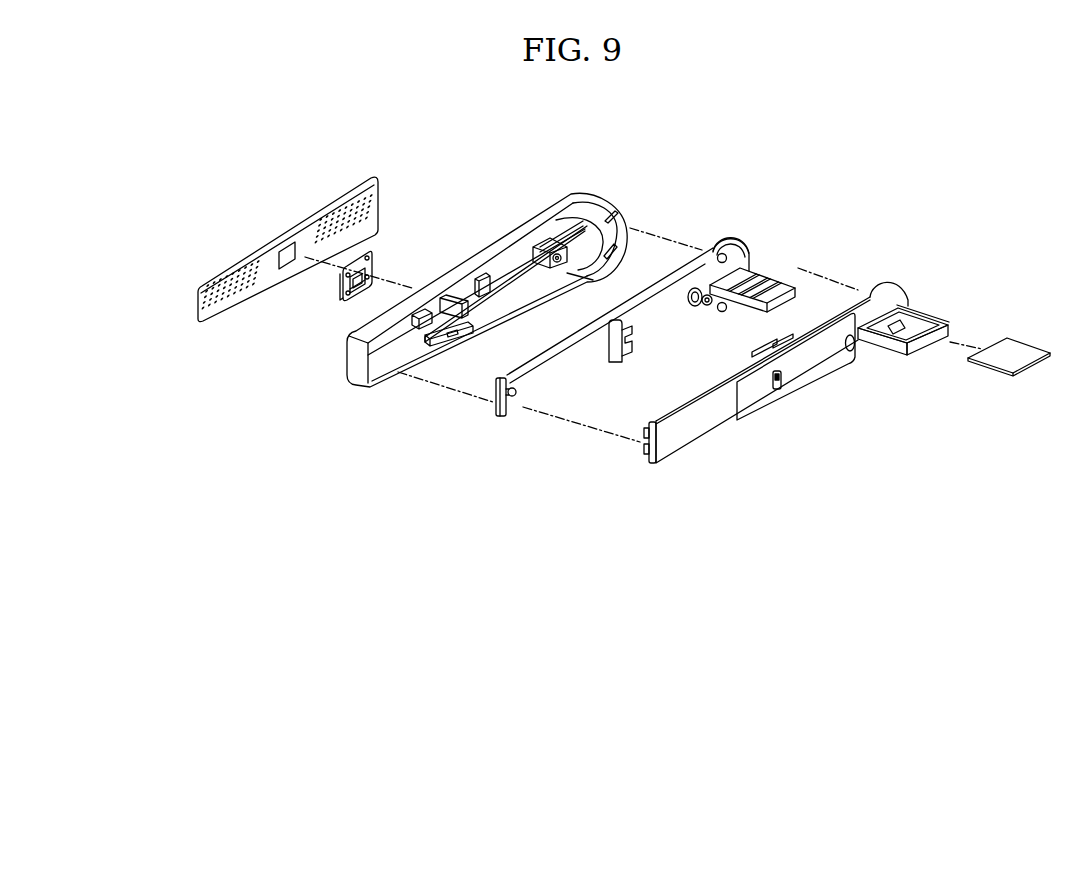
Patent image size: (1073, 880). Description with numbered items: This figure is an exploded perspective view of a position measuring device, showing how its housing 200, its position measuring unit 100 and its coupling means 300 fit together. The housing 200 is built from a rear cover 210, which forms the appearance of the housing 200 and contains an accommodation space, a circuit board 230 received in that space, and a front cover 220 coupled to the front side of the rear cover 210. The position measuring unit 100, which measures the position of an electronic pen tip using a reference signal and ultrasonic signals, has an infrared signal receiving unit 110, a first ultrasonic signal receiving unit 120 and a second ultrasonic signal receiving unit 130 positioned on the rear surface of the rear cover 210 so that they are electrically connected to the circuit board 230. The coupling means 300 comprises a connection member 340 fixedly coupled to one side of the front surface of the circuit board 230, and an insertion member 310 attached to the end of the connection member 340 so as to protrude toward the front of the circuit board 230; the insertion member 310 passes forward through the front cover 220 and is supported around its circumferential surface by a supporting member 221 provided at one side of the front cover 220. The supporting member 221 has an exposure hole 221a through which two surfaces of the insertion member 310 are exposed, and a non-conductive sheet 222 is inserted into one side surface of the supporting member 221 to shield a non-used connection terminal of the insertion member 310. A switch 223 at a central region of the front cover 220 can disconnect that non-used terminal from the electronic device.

The position measuring unit 100 is at (197, 184).
The infrared signal receiving unit 110 is at (347, 214).
The first ultrasonic signal receiving unit 120 is at (358, 258).
The second ultrasonic signal receiving unit 130 is at (238, 263).
The housing 200 is at (575, 522).
The rear cover 210 is at (356, 362).
The front cover 220 is at (667, 441).
The supporting member 221 is at (923, 310).
The exposure hole 221a is at (892, 330).
The non-conductive sheet 222 is at (1013, 352).
The switch 223 is at (783, 380).
The circuit board 230 is at (527, 397).
The coupling means 300 is at (750, 203).
The insertion member 310 is at (765, 280).
The connection member 340 is at (733, 270).